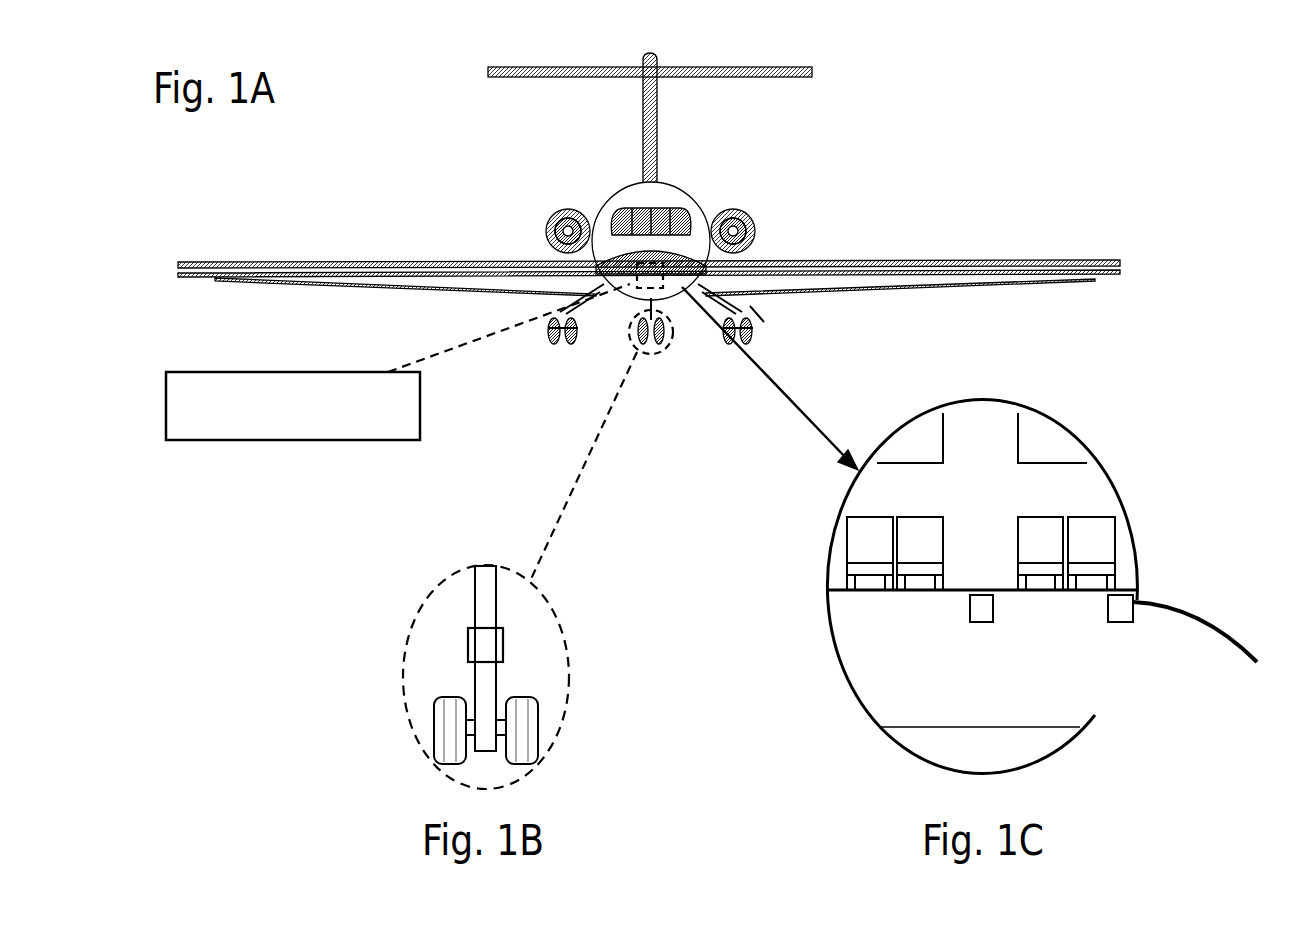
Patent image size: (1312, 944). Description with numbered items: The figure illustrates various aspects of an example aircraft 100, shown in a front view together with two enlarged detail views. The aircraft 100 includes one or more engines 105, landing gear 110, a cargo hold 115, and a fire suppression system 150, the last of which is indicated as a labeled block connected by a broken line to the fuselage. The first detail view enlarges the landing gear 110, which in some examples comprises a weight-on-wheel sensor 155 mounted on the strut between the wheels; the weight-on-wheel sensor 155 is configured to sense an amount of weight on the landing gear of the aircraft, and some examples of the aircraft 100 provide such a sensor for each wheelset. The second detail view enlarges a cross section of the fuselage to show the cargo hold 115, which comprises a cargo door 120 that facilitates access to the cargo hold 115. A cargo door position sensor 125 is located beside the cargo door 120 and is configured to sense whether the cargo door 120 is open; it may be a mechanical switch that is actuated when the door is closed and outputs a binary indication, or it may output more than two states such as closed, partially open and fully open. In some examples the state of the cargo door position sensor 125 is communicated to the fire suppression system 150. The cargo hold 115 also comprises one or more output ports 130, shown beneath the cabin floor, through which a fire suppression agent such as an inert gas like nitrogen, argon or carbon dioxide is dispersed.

In FIG. 1A, the aircraft 100 is at (525, 268).
In FIG. 1A, the engine 105 is at (739, 212).
In FIG. 1B, the landing gear 110 is at (415, 622).
In FIG. 1C, the cargo hold 115 is at (845, 640).
In FIG. 1C, the cargo door 120 is at (1225, 634).
In FIG. 1C, the cargo door position sensor 125 is at (1113, 592).
In FIG. 1C, the output port 130 is at (978, 622).
In FIG. 1A, the fire suppression system 150 is at (308, 432).
In FIG. 1B, the weight-on-wheel sensor 155 is at (468, 647).